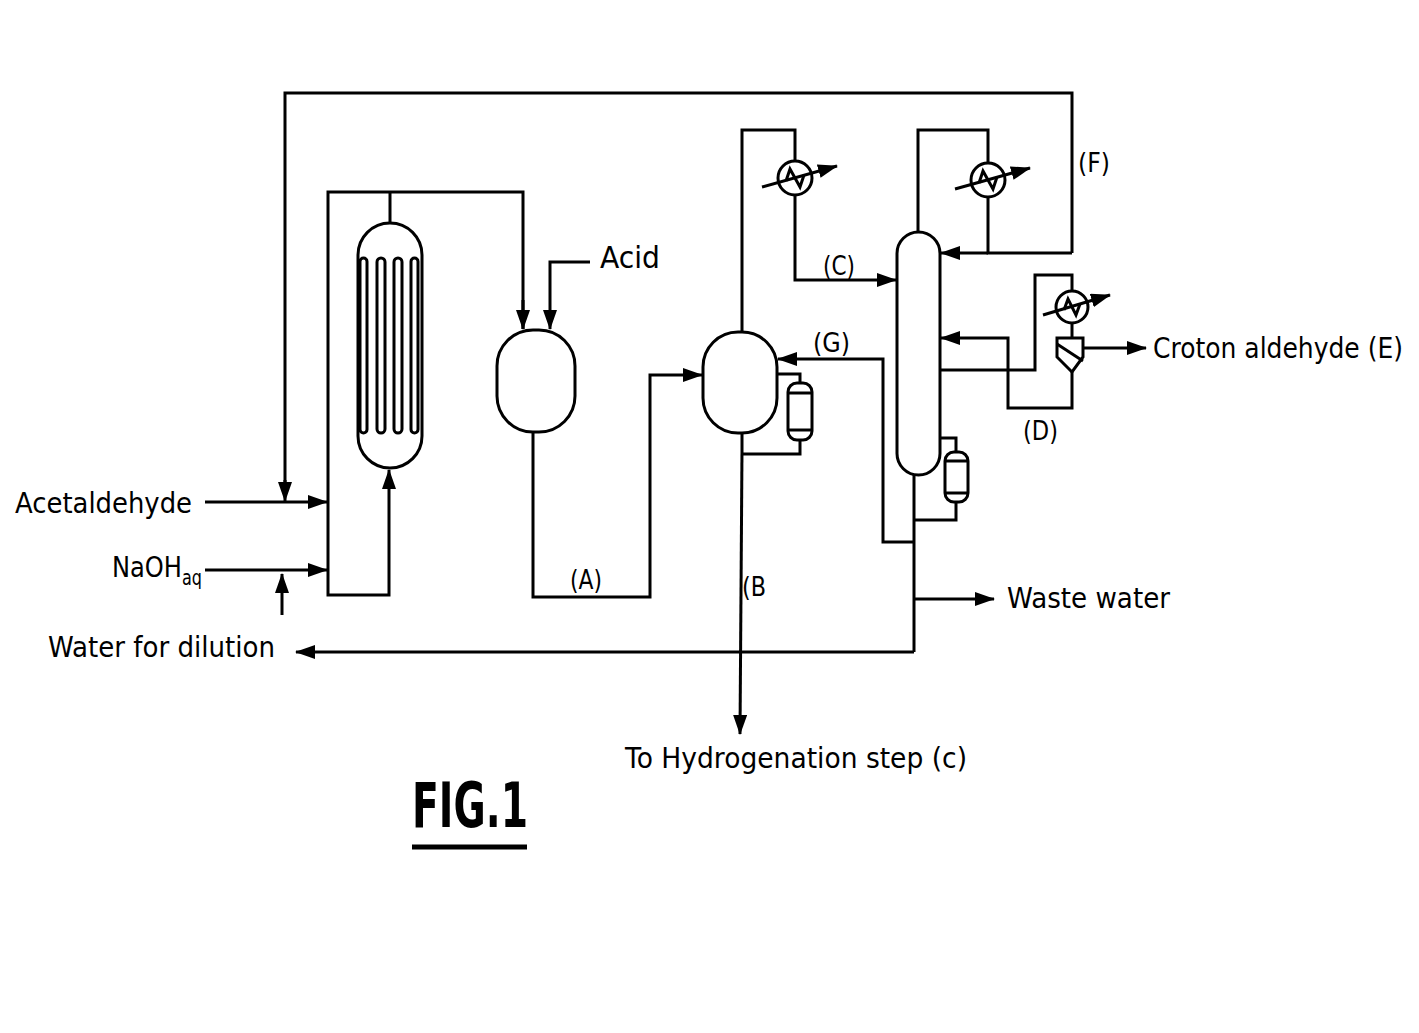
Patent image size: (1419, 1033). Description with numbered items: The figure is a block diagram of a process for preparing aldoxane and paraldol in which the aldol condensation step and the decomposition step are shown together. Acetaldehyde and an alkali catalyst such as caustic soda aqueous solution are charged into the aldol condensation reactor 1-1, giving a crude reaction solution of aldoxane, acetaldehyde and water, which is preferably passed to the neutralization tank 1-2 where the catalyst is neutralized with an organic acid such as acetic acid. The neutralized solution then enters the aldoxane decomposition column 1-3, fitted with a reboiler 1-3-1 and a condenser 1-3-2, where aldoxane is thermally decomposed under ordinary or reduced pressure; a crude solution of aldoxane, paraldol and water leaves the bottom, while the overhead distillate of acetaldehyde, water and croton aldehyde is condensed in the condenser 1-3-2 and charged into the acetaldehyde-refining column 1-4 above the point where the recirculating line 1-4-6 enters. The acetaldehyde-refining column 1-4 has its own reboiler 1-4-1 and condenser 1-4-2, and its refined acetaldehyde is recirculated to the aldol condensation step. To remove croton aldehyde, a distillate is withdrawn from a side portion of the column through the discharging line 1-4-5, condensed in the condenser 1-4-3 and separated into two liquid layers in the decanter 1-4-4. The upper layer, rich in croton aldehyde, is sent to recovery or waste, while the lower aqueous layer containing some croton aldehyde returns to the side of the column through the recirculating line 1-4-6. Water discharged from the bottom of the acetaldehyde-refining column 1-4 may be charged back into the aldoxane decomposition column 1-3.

The aldol condensation reactor 1-1 is at (405, 345).
The neutralization tank 1-2 is at (558, 381).
The aldoxane decomposition column 1-3 is at (728, 371).
The reboiler 1-3-1 is at (798, 419).
The condenser 1-3-2 is at (811, 192).
The acetaldehyde-refining column 1-4 is at (901, 353).
The reboiler 1-4-1 is at (964, 479).
The condenser 1-4-2 is at (1002, 194).
The condenser 1-4-3 is at (1095, 287).
The decanter 1-4-4 is at (1098, 369).
The discharging line 1-4-5 is at (1006, 339).
The recirculating line 1-4-6 is at (975, 337).